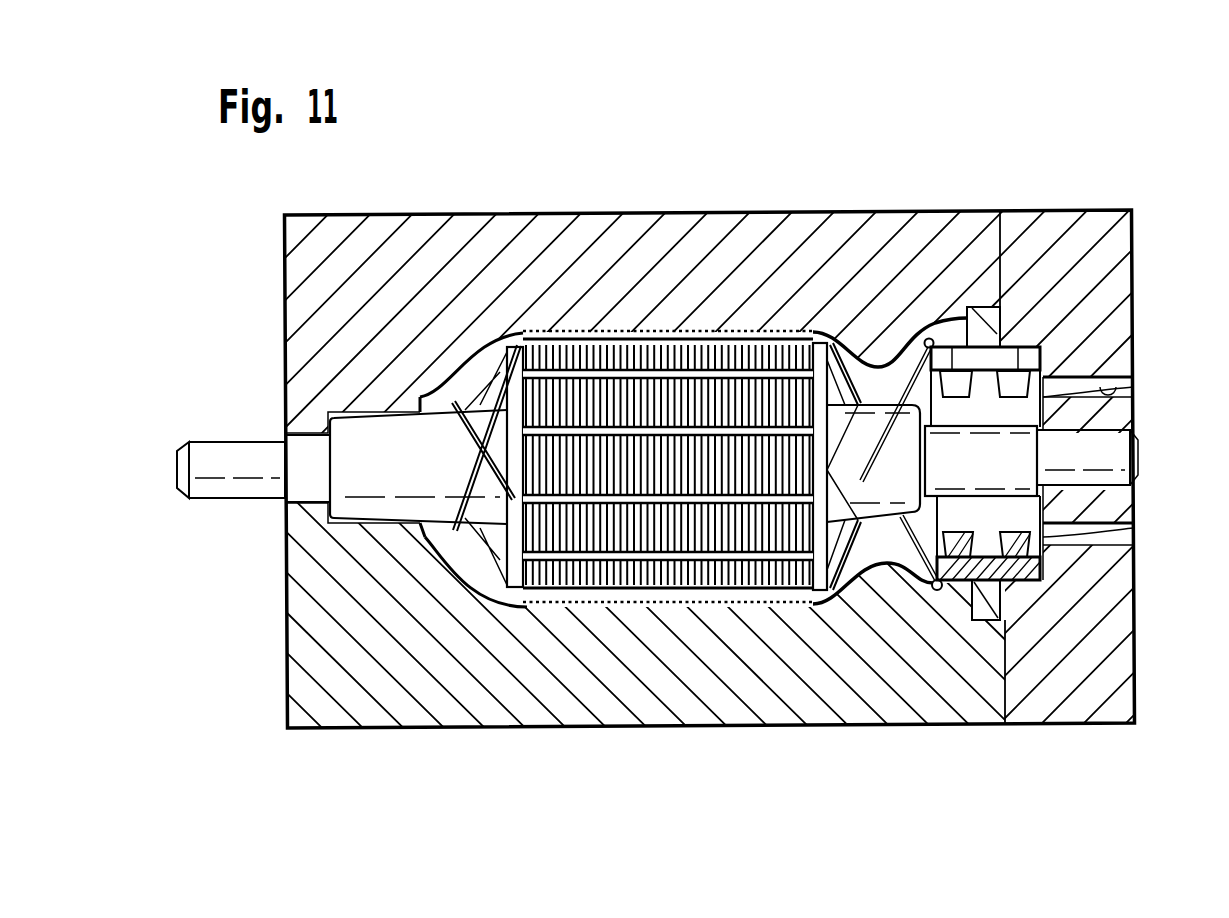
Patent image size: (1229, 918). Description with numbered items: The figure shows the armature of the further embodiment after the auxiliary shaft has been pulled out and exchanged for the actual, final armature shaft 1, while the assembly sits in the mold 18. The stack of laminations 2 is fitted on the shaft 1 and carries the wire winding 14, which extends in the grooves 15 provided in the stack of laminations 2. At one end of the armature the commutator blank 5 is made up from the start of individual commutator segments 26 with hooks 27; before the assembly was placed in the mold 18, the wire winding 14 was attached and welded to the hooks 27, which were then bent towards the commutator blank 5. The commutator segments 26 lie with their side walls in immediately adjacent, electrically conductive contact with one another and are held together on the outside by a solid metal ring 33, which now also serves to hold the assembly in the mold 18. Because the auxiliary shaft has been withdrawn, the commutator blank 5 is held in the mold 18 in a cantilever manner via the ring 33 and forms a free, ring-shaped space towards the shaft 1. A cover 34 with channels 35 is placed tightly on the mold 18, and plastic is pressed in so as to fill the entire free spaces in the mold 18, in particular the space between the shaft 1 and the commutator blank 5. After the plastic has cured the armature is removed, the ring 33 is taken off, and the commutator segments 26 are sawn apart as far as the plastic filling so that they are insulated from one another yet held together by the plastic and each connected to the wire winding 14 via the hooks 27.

The armature shaft 1 is at (237, 462).
The stack of laminations 2 is at (652, 353).
The commutator blank 5 is at (961, 589).
The wire winding 14 is at (488, 374).
The grooves 15 is at (607, 430).
The mold 18 is at (286, 294).
The commutator segments 26 is at (1003, 351).
The hooks 27 is at (930, 313).
The ring 33 is at (983, 305).
The cover 34 is at (1073, 250).
The channels 35 is at (1133, 387).